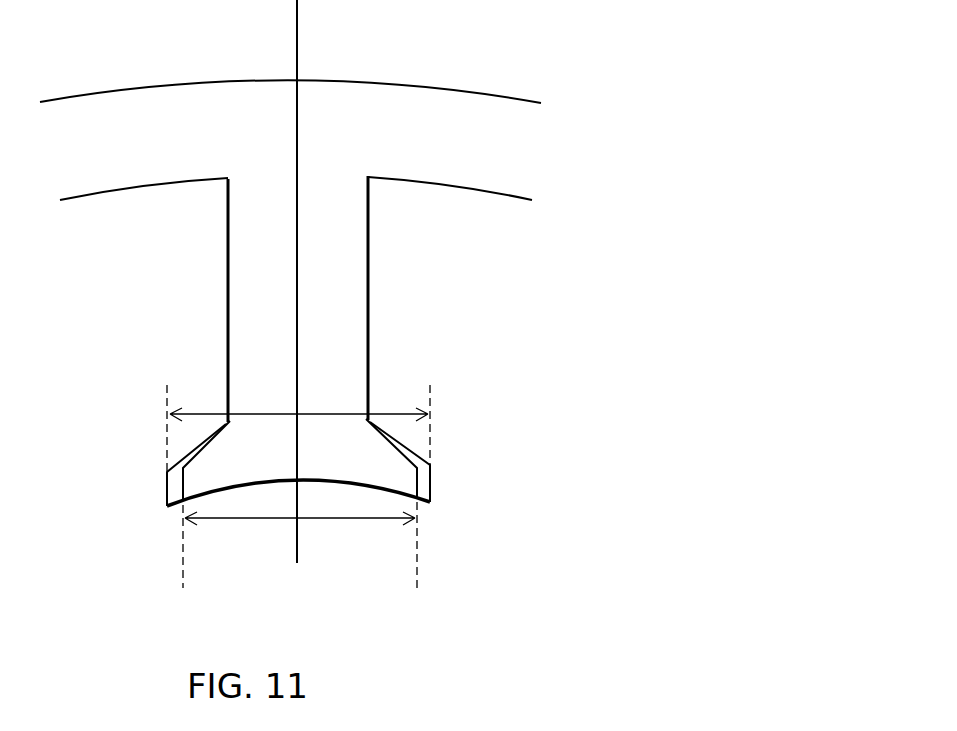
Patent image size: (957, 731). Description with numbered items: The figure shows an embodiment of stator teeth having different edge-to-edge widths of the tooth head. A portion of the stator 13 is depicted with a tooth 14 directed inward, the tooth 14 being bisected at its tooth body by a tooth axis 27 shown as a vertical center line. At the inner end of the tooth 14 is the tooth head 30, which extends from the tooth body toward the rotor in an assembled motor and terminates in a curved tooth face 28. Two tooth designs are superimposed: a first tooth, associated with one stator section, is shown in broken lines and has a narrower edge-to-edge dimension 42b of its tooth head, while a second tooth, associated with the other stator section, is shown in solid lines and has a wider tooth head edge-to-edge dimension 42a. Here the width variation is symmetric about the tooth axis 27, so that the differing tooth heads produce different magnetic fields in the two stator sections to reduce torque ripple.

The stator 13 is at (541, 65).
The tooth 14 is at (432, 338).
The tooth axis 27 is at (298, 532).
The tooth face 28 is at (237, 492).
The tooth head 30 is at (350, 462).
The tooth head edge-to-edge dimension of the second tooth 42a is at (333, 414).
The edge-to-edge dimension of the first tooth 42b is at (367, 520).